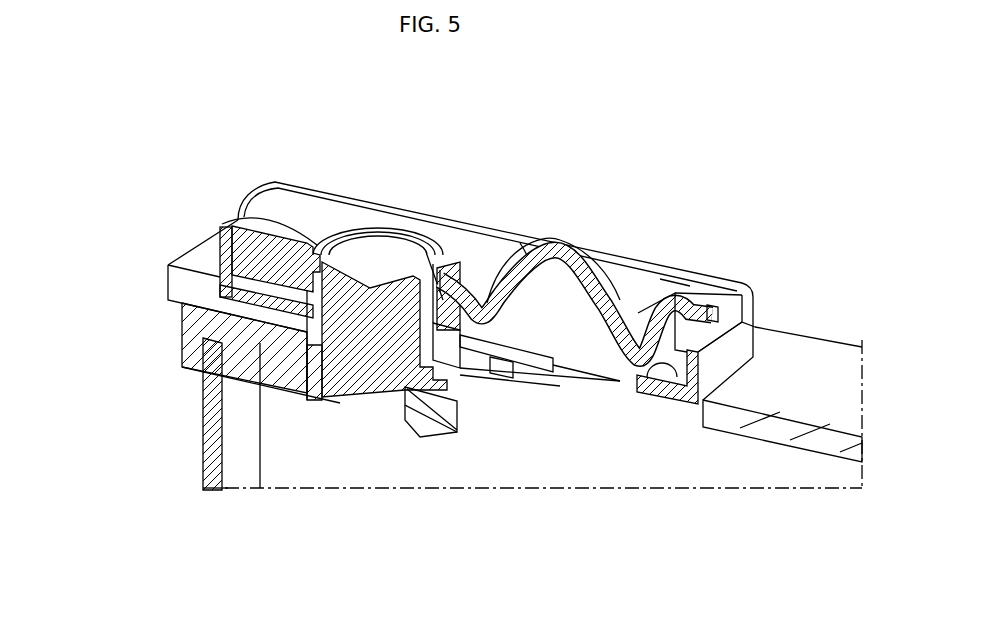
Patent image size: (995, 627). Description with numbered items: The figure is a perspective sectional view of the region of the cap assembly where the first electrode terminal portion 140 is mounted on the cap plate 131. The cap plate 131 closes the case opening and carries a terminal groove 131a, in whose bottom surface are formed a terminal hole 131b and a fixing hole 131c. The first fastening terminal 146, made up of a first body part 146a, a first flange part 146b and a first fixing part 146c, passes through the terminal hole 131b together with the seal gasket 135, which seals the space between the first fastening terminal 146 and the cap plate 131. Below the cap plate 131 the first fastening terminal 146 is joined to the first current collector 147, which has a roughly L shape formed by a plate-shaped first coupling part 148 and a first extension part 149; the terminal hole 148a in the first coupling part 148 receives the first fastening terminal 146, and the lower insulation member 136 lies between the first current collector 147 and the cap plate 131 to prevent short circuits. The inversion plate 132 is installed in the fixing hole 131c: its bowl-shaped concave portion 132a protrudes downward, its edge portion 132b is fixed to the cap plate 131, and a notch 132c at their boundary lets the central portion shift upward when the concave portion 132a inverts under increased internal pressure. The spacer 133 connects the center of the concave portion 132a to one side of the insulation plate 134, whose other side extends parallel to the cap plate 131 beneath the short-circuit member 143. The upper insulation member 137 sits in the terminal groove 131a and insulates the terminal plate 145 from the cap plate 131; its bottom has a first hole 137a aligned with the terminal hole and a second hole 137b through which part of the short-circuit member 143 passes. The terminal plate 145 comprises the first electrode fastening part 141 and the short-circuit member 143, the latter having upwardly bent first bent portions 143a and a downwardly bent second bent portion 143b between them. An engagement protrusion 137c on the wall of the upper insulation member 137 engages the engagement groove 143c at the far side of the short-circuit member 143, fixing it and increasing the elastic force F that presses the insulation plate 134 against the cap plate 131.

The first electrode terminal portion 140 is at (171, 139).
The first electrode fastening part 141 is at (487, 240).
The terminal plate 145 is at (697, 158).
The short-circuit member 143 is at (790, 226).
The first bent portion 143a is at (563, 253).
The second bent portion 143b is at (620, 313).
The engagement groove 143c is at (718, 307).
The insulation plate 134 is at (520, 330).
The upper insulation member 137 is at (733, 317).
The first hole 137a is at (407, 282).
The second hole 137b is at (623, 375).
The engagement protrusion 137c is at (700, 350).
The cap plate 131 is at (818, 352).
The terminal groove 131a is at (685, 407).
The terminal hole 131b is at (378, 277).
The fixing hole 131c is at (452, 380).
The first fastening terminal 146 is at (75, 236).
The first body part 146a is at (218, 278).
The first flange part 146b is at (207, 326).
The first fixing part 146c is at (235, 215).
The lower insulation member 136 is at (195, 349).
The first extension part 149 is at (230, 417).
The first current collector 147 is at (182, 465).
The first coupling part 148 is at (262, 378).
The terminal hole 148a is at (362, 382).
The seal gasket 135 is at (308, 352).
The inversion plate 132 is at (527, 380).
The concave portion 132a is at (532, 396).
The edge portion 132b is at (547, 388).
The notch 132c is at (408, 406).
The spacer 133 is at (498, 382).